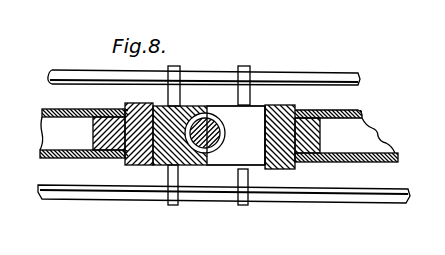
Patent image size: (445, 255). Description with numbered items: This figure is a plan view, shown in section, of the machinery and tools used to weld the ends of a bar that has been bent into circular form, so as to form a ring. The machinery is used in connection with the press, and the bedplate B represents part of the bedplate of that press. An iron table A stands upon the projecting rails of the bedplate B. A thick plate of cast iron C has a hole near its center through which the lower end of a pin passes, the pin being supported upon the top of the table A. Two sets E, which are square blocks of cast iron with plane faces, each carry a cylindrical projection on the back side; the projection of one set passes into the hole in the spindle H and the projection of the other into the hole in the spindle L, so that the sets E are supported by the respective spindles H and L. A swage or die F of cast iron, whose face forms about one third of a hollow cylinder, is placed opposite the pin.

The iron table A is at (214, 128).
The bedplate B is at (232, 138).
The thick plate of cast iron C is at (236, 135).
The sets E is at (206, 151).
The swage F is at (172, 161).
The spindle H is at (343, 175).
The spindle L is at (81, 170).